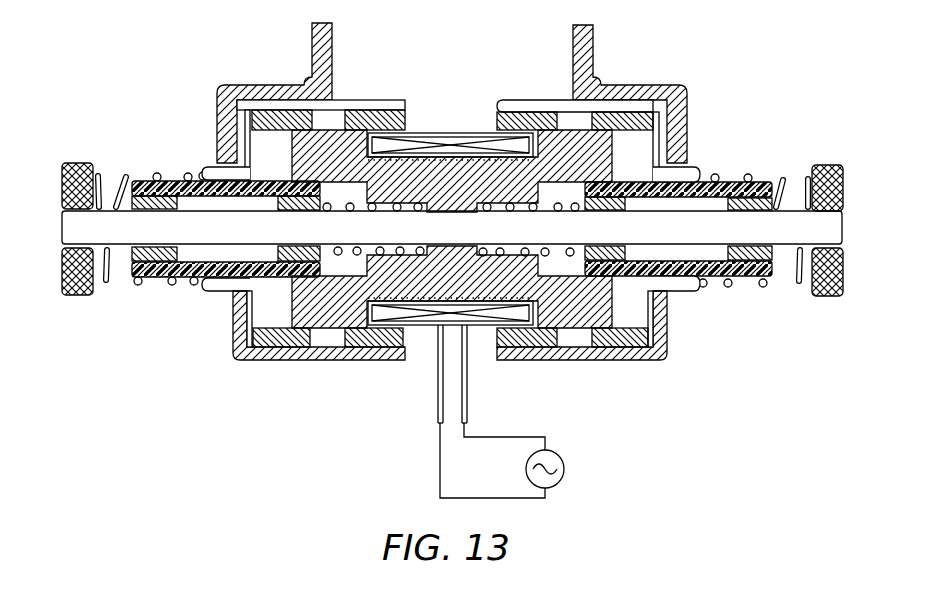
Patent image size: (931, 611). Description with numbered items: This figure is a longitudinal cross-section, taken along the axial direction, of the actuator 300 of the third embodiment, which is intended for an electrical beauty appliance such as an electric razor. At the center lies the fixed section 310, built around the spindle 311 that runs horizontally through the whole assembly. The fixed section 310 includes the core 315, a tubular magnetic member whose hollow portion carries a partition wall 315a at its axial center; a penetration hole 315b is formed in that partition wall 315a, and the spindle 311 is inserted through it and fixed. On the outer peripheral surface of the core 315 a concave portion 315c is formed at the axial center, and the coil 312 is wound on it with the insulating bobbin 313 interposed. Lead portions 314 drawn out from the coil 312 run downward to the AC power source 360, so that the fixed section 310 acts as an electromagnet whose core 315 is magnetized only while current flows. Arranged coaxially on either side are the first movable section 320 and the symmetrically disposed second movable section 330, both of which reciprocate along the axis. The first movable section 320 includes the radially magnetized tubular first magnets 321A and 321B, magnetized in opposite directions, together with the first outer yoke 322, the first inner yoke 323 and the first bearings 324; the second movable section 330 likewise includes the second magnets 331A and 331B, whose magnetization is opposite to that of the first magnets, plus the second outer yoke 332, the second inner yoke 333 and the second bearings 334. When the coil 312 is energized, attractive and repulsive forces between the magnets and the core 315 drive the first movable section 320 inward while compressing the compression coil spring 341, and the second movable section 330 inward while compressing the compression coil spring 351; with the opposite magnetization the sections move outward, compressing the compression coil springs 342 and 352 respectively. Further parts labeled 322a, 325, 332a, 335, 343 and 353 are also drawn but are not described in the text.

The actuator 300 is at (188, 395).
The fixed section 310 is at (467, 128).
The spindle 311 is at (767, 227).
The coil 312 is at (448, 143).
The bobbin 313 is at (368, 320).
The lead portions 314 is at (465, 373).
The core 315 is at (330, 312).
The partition wall 315a is at (450, 257).
The penetration hole 315b is at (445, 235).
The concave portion 315c is at (527, 311).
The first movable section 320 is at (678, 55).
The first magnet 321A is at (527, 117).
The first magnet 321B is at (628, 118).
The first outer yoke 322 is at (508, 112).
The holder flange 322a is at (690, 177).
The first inner yoke 323 is at (730, 187).
The first bearings 324 is at (593, 250).
The weight 325 is at (593, 42).
The second movable section 330 is at (226, 52).
The second magnet 331A is at (375, 113).
The second magnet 331B is at (288, 117).
The second outer yoke 332 is at (337, 100).
The holder flange 332a is at (203, 170).
The second inner yoke 333 is at (145, 180).
The second bearings 334 is at (240, 266).
The weight 335 is at (328, 43).
The compression coil spring 341 is at (547, 254).
The compression coil spring 342 is at (782, 178).
The stopper ring 343 is at (833, 167).
The compression coil spring 351 is at (285, 342).
The compression coil spring 352 is at (94, 170).
The stopper ring 353 is at (63, 177).
The AC power source 360 is at (562, 467).